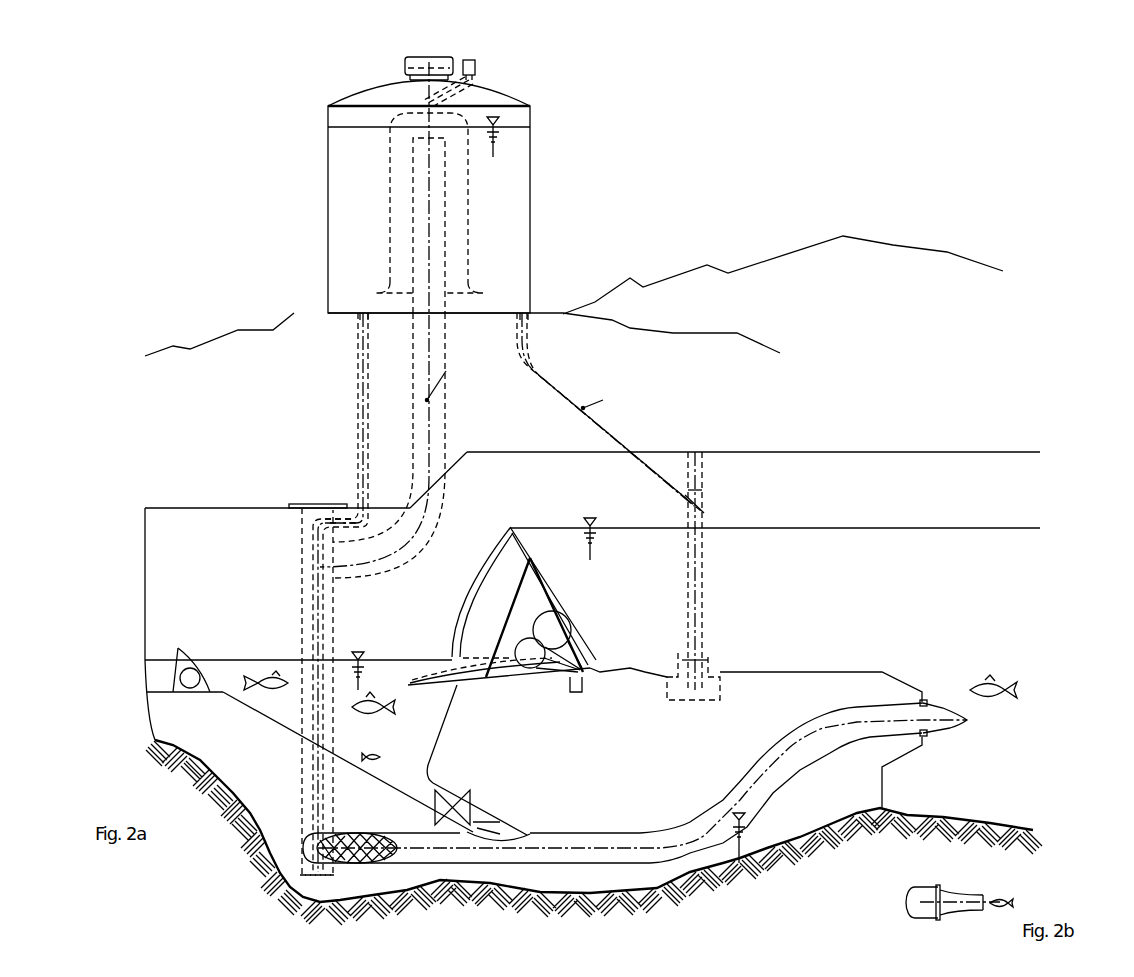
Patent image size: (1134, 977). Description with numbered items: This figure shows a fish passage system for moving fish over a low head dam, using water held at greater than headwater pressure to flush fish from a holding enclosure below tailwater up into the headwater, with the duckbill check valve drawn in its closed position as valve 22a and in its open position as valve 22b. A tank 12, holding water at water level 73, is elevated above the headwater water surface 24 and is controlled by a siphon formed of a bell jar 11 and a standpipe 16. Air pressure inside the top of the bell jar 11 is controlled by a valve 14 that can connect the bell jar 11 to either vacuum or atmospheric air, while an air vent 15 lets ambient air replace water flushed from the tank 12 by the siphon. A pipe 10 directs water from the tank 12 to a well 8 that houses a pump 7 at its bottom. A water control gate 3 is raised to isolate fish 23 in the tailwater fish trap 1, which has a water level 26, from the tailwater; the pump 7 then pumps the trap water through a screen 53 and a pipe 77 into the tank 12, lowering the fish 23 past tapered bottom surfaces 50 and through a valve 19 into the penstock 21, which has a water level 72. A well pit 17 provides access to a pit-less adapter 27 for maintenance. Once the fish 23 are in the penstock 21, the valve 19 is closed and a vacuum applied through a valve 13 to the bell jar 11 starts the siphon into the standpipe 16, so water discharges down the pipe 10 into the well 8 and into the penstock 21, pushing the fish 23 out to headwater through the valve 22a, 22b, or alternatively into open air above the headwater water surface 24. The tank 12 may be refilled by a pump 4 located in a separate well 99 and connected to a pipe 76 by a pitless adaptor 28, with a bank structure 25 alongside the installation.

In FIG. 2a, the tailwater fish trap 1 is at (393, 730).
In FIG. 2a, the water control gate 3 is at (190, 680).
In FIG. 2a, the pump 4 is at (682, 697).
In FIG. 2a, the pump 7 is at (318, 873).
In FIG. 2a, the well 8 is at (303, 555).
In FIG. 2a, the pipe 10 is at (415, 398).
In FIG. 2a, the bell jar 11 is at (468, 233).
In FIG. 2a, the tank 12 is at (532, 153).
In FIG. 2a, the valve 13 is at (470, 82).
In FIG. 2a, the valve 14 is at (468, 62).
In FIG. 2a, the air vent 15 is at (406, 60).
In FIG. 2a, the standpipe 16 is at (422, 137).
In FIG. 2a, the well pit 17 is at (291, 506).
In FIG. 2a, the valve 19 is at (458, 795).
In FIG. 2a, the penstock 21 is at (572, 833).
In FIG. 2b, the penstock 21 is at (920, 902).
In FIG. 2a, the valve 22a is at (933, 718).
In FIG. 2b, the valve 22b is at (958, 902).
In FIG. 2a, the fish 23 is at (270, 680).
In FIG. 2b, the fish 23 is at (1005, 902).
In FIG. 2a, the headwater water surface 24 is at (865, 528).
In FIG. 2a, the bank structure 25 is at (155, 660).
In FIG. 2a, the water level 26 is at (373, 660).
In FIG. 2a, the pit-less adapter 27 is at (332, 522).
In FIG. 2a, the pitless adaptor 28 is at (688, 498).
In FIG. 2a, the tapered bottom surfaces 50 is at (288, 727).
In FIG. 2a, the screen 53 is at (370, 858).
In FIG. 2a, the water level 72 is at (716, 822).
In FIG. 2a, the water level 73 is at (504, 127).
In FIG. 2a, the pipe 76 is at (558, 395).
In FIG. 2a, the pipe 77 is at (358, 403).
In FIG. 2a, the well 99 is at (695, 450).